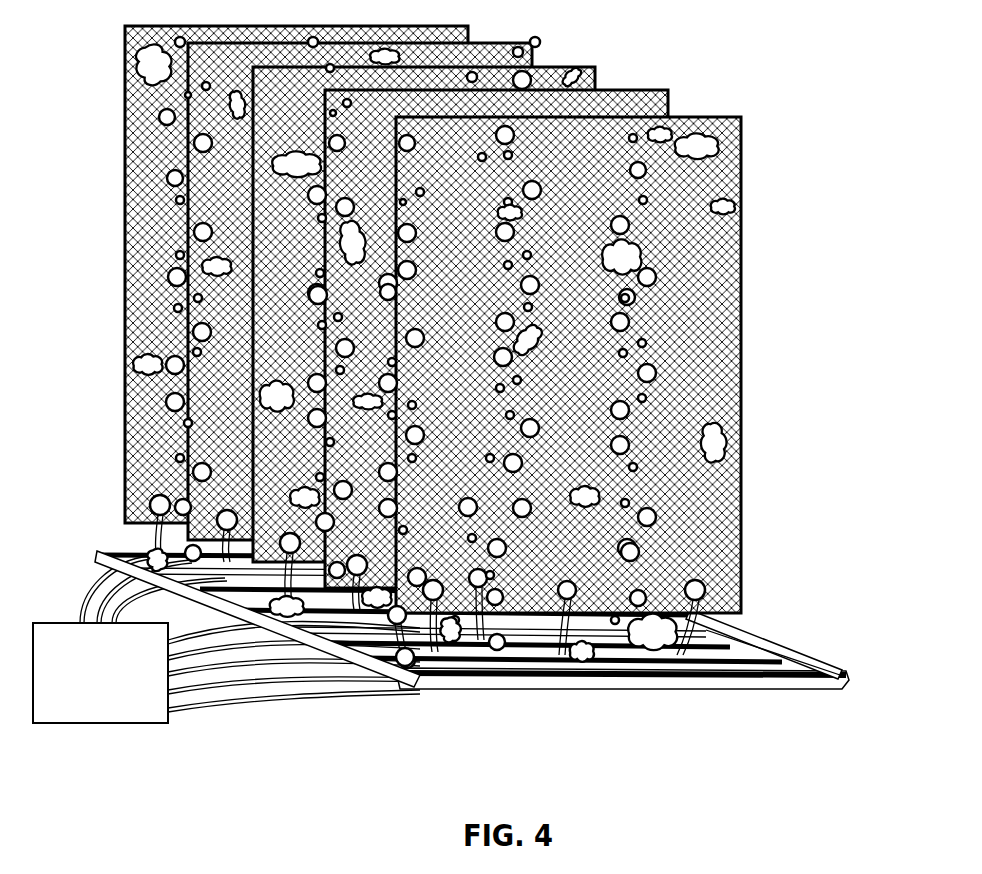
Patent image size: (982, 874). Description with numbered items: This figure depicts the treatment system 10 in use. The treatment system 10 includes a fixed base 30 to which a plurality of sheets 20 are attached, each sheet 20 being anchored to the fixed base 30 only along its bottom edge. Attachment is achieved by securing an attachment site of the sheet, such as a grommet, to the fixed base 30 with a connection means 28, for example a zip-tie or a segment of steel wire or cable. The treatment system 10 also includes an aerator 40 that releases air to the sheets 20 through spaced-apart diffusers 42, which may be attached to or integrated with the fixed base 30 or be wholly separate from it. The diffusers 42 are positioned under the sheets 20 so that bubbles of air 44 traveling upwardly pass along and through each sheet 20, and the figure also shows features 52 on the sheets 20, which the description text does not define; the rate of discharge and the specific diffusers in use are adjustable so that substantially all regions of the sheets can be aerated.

The treatment system 10 is at (820, 99).
The sheet 20 is at (230, 250).
The connection means 28 is at (150, 538).
The fixed base 30 is at (843, 666).
The aerator 40 is at (100, 673).
The diffuser 42 is at (107, 588).
The bubbles of air 44 is at (626, 412).
The gas bubble clusters 52 is at (625, 258).